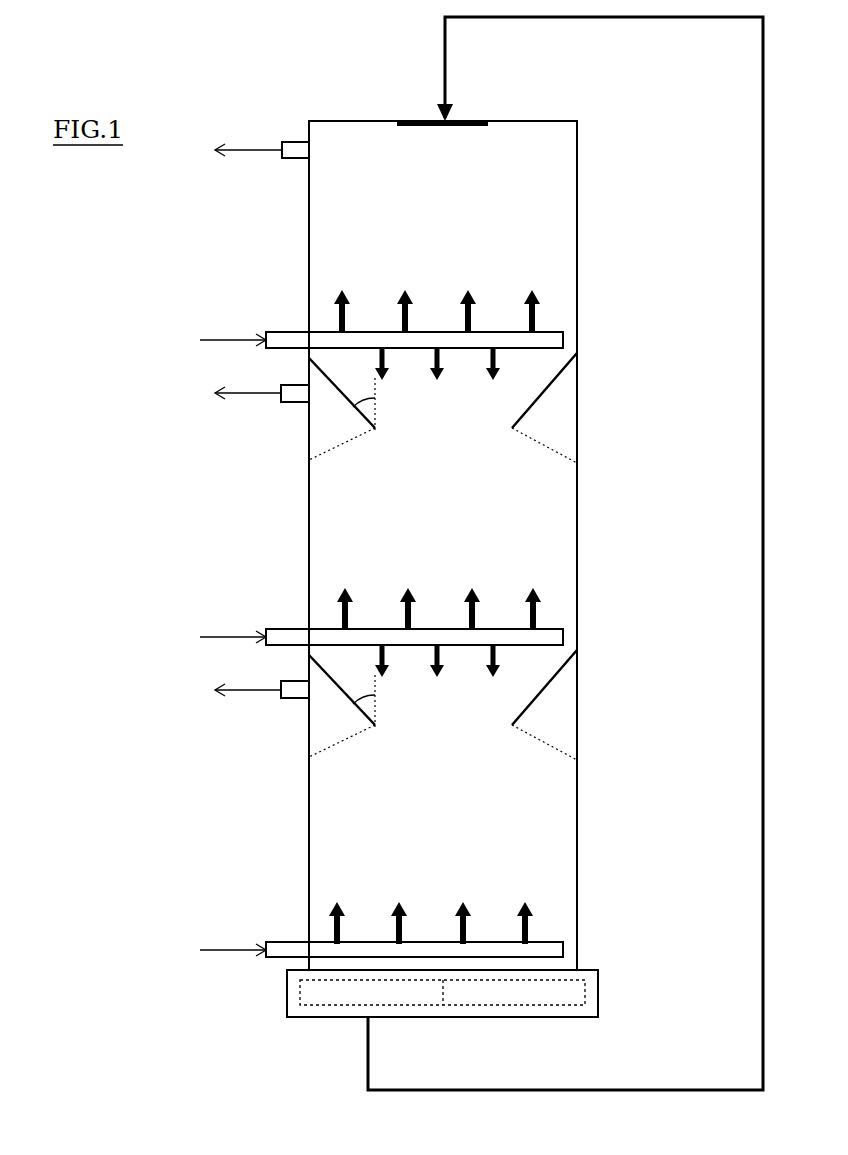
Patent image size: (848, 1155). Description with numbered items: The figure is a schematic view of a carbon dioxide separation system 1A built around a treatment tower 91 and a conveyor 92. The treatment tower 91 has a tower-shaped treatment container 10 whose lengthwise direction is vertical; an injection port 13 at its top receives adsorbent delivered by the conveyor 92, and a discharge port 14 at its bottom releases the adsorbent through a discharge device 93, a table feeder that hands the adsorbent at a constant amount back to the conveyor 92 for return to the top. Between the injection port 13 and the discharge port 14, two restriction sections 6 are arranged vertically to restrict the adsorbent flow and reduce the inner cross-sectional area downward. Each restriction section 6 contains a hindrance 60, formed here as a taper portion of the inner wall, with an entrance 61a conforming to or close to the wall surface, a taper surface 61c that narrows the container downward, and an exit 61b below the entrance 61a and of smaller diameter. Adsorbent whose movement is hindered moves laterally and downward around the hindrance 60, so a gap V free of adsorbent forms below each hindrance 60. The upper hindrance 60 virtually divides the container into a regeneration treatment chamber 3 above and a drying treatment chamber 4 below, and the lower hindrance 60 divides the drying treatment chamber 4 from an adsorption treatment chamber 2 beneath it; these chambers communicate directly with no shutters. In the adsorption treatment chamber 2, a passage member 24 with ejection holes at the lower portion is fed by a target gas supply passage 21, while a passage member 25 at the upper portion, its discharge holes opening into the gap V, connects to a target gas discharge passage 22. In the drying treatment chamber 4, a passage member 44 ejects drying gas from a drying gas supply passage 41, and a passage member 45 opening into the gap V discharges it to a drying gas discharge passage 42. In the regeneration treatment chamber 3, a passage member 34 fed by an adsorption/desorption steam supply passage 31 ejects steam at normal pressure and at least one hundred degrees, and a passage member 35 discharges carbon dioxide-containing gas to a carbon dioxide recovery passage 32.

The carbon dioxide separation system 1A is at (192, 92).
The treatment container 10 is at (577, 558).
The adsorption treatment chamber 2 is at (434, 803).
The regeneration treatment chamber 3 is at (434, 165).
The drying treatment chamber 4 is at (434, 533).
The injection port 13 is at (415, 128).
The discharge port 14 is at (548, 968).
The target gas supply passage 21 is at (233, 949).
The target gas discharge passage 22 is at (257, 692).
The passage member 24 is at (283, 941).
The passage member 25 is at (283, 698).
The adsorption/desorption steam supply passage 31 is at (226, 338).
The carbon dioxide recovery passage 32 is at (260, 147).
The passage member 34 is at (283, 331).
The passage member 35 is at (298, 142).
The drying gas supply passage 41 is at (226, 636).
The drying gas discharge passage 42 is at (257, 395).
The passage member 44 is at (283, 628).
The passage member 45 is at (290, 385).
The restriction section 6 is at (497, 405).
The hindrance 60 is at (531, 541).
The entrance 61a is at (568, 360).
The exit 61b is at (514, 433).
The taper surface 61c is at (552, 372).
The treatment tower 91 is at (617, 200).
The conveyor 92 is at (764, 353).
The discharge device 93 is at (600, 993).
The gap V is at (327, 427).